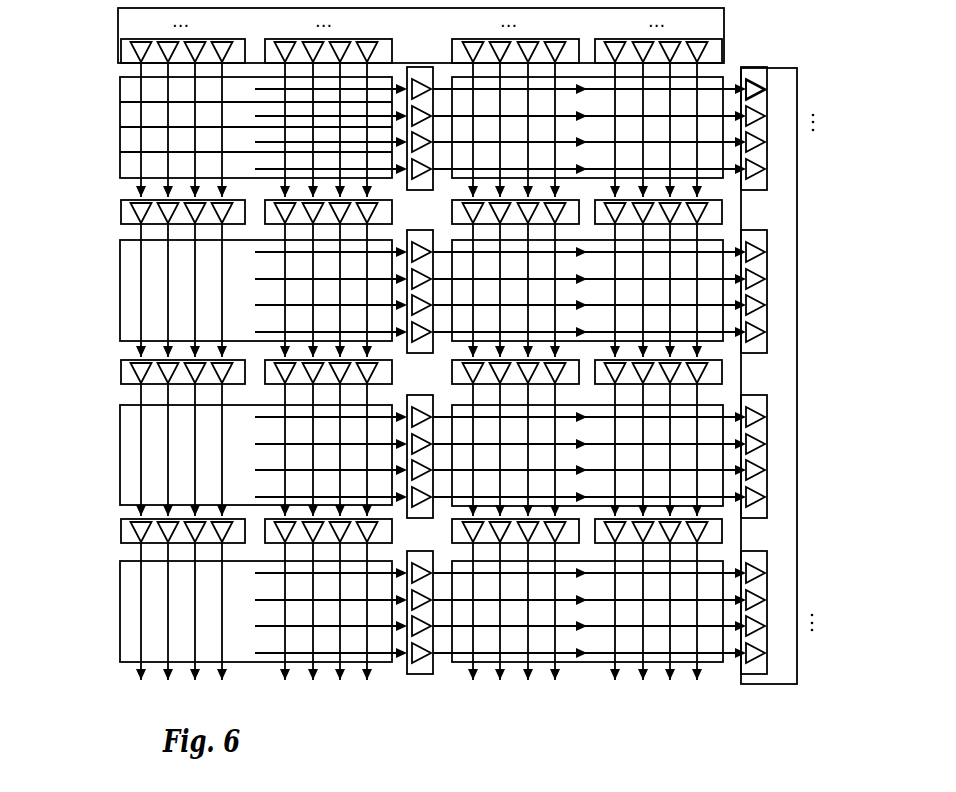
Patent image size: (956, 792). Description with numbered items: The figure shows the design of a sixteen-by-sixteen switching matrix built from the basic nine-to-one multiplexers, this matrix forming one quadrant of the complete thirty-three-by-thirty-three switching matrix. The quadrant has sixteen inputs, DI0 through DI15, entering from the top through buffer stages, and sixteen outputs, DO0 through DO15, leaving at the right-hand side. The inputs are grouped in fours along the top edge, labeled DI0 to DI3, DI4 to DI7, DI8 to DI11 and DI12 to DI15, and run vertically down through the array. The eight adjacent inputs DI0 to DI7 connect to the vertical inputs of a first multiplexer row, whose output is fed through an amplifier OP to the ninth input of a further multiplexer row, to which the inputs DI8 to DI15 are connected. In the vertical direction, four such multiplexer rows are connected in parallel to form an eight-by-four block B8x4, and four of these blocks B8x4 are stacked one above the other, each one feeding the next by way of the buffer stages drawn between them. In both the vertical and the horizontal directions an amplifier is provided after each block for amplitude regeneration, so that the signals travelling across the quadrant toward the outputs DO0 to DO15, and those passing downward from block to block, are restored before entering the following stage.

The 8×4 block B8x4 is at (110, 80).
The amplifier OP is at (755, 90).
The output DO0 is at (821, 89).
The output DO15 is at (825, 658).
The input DI0 is at (136, 20).
The input DI3 is at (220, 20).
The input DI4 is at (278, 20).
The input DI7 is at (370, 20).
The input DI8 is at (469, 20).
The input DI11 is at (554, 20).
The input DI12 is at (619, 20).
The input DI15 is at (698, 20).